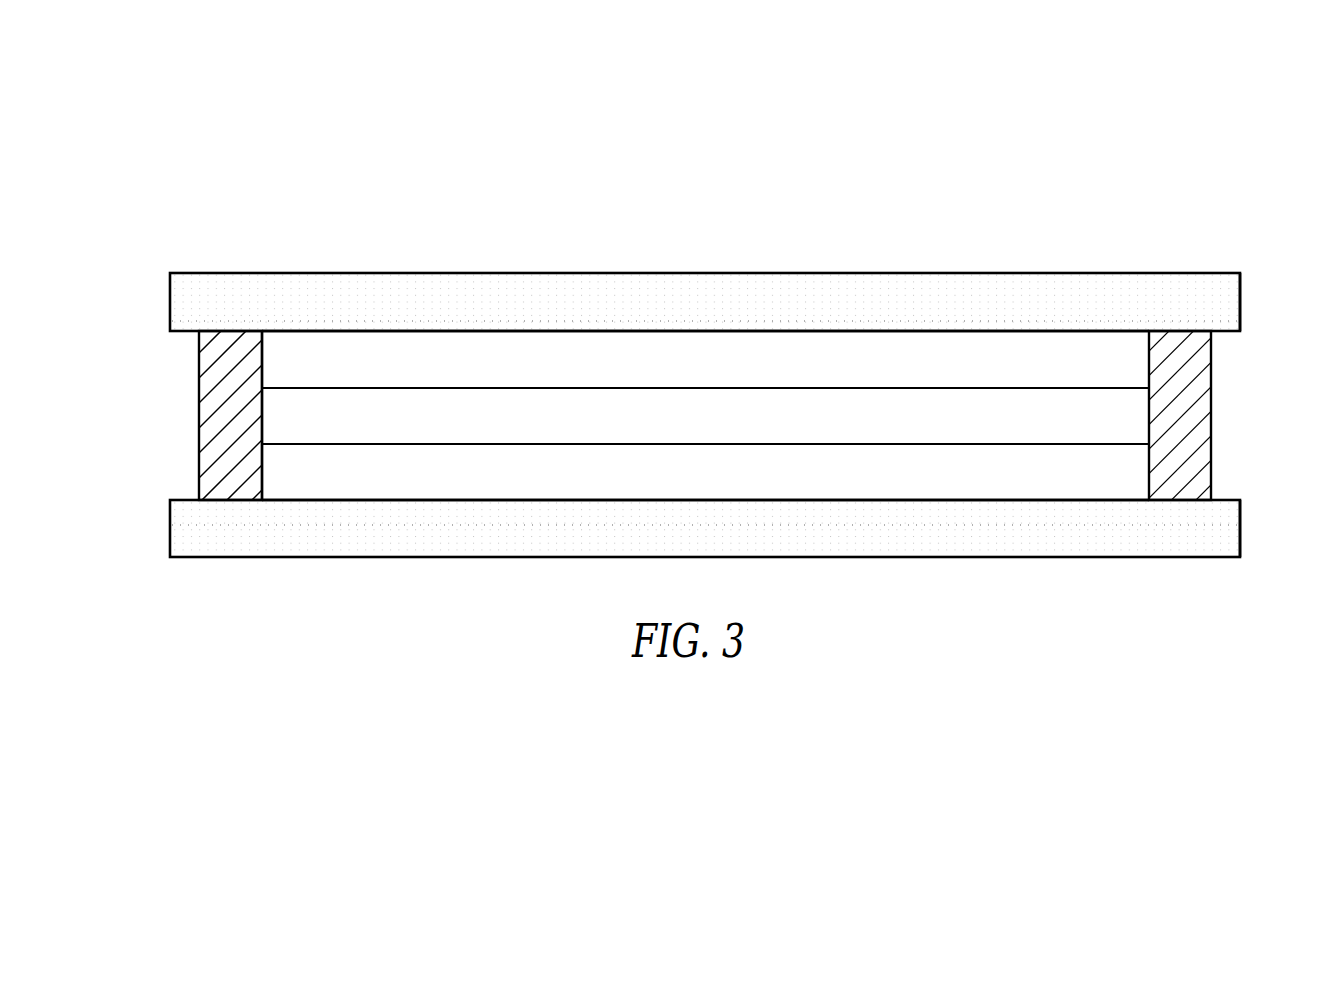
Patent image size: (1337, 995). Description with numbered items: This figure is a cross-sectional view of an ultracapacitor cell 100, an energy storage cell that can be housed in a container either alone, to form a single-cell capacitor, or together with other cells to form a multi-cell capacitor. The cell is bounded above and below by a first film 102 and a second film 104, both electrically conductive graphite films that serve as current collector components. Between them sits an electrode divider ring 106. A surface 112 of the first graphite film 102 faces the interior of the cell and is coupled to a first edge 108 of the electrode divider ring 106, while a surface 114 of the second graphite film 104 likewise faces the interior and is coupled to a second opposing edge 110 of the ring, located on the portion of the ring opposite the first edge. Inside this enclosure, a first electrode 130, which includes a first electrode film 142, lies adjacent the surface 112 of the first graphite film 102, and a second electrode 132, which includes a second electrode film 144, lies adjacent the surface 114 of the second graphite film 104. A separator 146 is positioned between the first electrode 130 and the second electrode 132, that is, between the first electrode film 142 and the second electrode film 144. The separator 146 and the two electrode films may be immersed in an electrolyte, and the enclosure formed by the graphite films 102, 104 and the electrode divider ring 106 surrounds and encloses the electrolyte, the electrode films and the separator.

The ultracapacitor cell 100 is at (269, 126).
The first film 102 is at (190, 299).
The second film 104 is at (190, 526).
The electrode divider ring 106 is at (1191, 409).
The first edge 108 is at (868, 331).
The second opposing edge 110 is at (870, 500).
The surface 112 is at (1240, 331).
The surface 114 is at (1240, 500).
The first electrode 130 is at (250, 359).
The second electrode 132 is at (250, 472).
The first electrode film 142 is at (726, 373).
The second electrode film 144 is at (726, 485).
The separator 146 is at (726, 429).